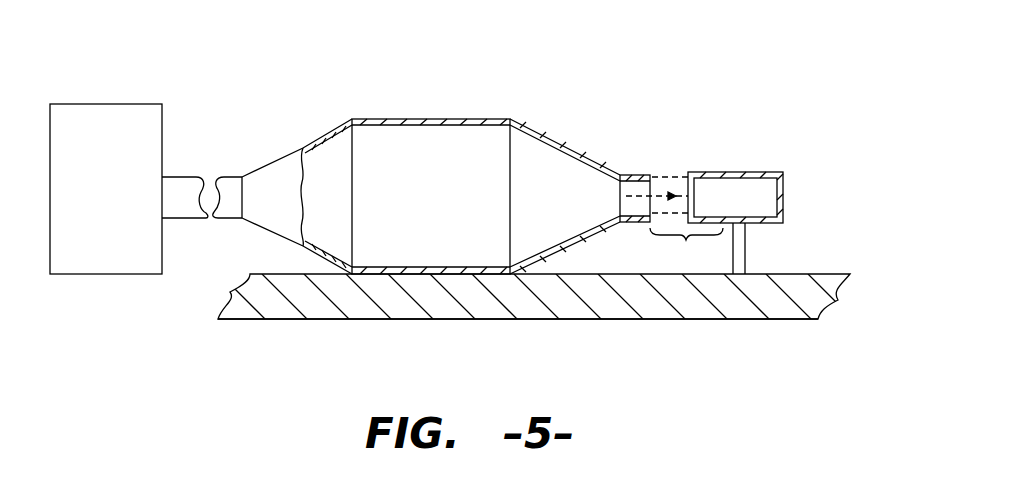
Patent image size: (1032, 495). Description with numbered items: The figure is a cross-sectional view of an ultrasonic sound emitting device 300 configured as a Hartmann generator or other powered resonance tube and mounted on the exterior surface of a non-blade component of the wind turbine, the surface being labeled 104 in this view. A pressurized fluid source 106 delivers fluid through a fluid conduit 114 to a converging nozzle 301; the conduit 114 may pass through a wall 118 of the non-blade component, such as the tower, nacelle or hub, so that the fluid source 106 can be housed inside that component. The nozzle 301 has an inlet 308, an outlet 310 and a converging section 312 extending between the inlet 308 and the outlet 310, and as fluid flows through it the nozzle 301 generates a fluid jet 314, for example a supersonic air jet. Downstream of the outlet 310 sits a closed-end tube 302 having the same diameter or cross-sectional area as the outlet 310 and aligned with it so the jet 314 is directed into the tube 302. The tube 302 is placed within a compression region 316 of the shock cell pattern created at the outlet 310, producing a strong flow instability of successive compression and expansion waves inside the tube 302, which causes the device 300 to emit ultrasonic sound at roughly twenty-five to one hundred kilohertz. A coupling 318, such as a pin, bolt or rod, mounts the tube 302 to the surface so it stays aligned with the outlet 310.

The surface / ground 104 is at (773, 274).
The pressurized fluid source 106 is at (123, 201).
The fluid conduit 114 is at (183, 190).
The wall 118 is at (723, 320).
The ultrasonic sound emitting device 300 is at (657, 72).
The converging nozzle 301 is at (425, 120).
The closed-end tube 302 is at (758, 172).
The inlet 308 is at (330, 135).
The outlet 310 is at (663, 176).
The converging section 312 is at (627, 166).
The fluid jet 314 is at (673, 178).
The compression region 316 is at (686, 251).
The coupling 318 is at (747, 243).